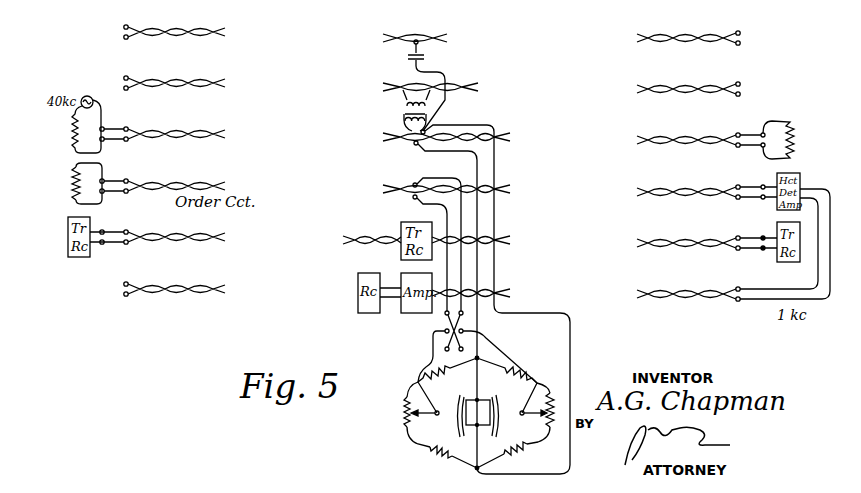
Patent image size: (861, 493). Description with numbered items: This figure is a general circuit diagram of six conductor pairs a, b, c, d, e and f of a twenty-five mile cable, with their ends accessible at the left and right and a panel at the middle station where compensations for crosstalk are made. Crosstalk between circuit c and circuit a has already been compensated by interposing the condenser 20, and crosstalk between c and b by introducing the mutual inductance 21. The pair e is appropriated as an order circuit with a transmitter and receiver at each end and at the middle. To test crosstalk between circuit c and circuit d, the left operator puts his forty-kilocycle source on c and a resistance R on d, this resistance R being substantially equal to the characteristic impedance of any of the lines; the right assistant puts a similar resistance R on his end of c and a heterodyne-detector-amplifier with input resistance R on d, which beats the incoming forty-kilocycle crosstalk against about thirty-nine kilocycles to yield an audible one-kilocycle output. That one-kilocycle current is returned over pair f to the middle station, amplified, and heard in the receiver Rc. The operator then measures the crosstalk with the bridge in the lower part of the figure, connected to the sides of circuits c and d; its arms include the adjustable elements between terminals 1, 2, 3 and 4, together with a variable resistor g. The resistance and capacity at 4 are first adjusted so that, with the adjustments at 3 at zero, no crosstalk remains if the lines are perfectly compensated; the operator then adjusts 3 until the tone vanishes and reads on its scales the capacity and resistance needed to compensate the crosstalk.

The condenser 20 is at (424, 57).
The mutual inductance 21 is at (403, 111).
The terminal 1 is at (445, 303).
The terminal 2 is at (446, 257).
The capacity and resistance adjustments 3 is at (475, 299).
The resistance and capacity adjustment 4 is at (421, 312).
The conductor pair a is at (288, 239).
The conductor pair b is at (174, 76).
The conductor pair c is at (317, 274).
The conductor pair d is at (326, 317).
The conductor pair e is at (174, 230).
The conductor pair f is at (432, 285).
The variable resistor g is at (484, 410).
The resistance R is at (87, 183).